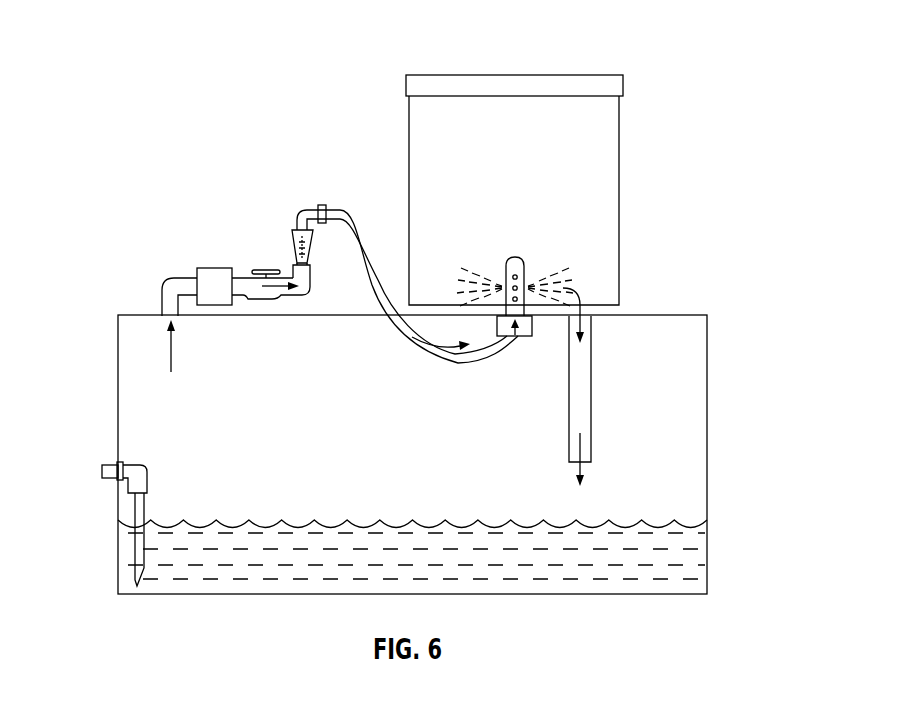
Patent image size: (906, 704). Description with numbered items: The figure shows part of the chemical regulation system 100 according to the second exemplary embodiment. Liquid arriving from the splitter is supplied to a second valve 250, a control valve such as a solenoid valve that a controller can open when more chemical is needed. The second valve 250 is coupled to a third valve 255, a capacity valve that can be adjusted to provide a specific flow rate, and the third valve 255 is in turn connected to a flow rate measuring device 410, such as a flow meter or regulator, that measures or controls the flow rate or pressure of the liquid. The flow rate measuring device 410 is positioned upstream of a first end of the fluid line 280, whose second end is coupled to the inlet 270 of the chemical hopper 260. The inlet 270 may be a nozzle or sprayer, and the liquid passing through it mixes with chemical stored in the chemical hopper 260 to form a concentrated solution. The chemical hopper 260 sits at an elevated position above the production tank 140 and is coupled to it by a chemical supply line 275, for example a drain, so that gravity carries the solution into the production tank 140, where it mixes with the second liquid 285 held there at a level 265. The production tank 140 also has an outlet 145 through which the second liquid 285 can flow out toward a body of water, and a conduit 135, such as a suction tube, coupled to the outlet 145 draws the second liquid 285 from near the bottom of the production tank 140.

The chemical regulation system 100 is at (653, 43).
The production tank 140 is at (707, 455).
The chemical hopper 260 is at (620, 158).
The inlet 270 is at (513, 257).
The chemical supply line 275 is at (592, 380).
The fluid line 280 is at (467, 363).
The flow rate measuring device 410 is at (295, 233).
The second valve 250 is at (200, 267).
The third valve 255 is at (268, 266).
The outlet 145 is at (102, 472).
The conduit 135 is at (133, 537).
The level 265 is at (201, 519).
The second liquid 285 is at (357, 543).